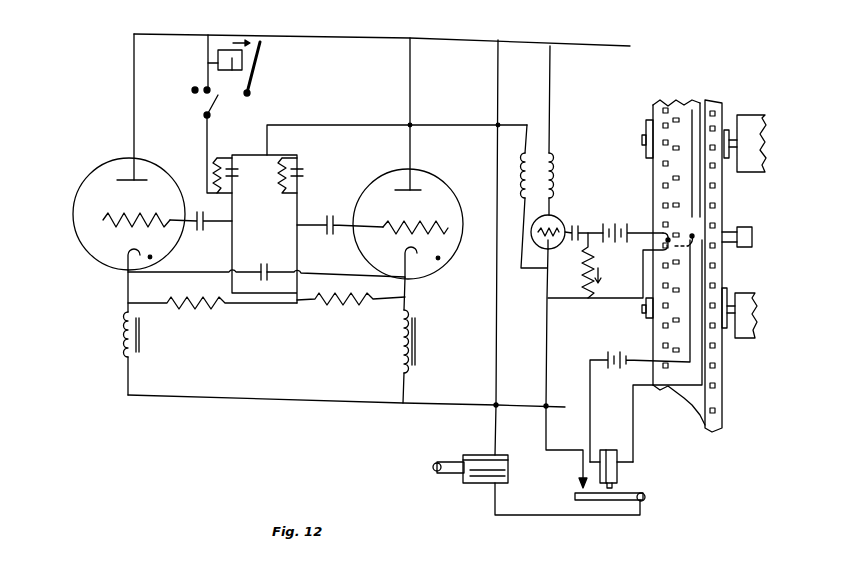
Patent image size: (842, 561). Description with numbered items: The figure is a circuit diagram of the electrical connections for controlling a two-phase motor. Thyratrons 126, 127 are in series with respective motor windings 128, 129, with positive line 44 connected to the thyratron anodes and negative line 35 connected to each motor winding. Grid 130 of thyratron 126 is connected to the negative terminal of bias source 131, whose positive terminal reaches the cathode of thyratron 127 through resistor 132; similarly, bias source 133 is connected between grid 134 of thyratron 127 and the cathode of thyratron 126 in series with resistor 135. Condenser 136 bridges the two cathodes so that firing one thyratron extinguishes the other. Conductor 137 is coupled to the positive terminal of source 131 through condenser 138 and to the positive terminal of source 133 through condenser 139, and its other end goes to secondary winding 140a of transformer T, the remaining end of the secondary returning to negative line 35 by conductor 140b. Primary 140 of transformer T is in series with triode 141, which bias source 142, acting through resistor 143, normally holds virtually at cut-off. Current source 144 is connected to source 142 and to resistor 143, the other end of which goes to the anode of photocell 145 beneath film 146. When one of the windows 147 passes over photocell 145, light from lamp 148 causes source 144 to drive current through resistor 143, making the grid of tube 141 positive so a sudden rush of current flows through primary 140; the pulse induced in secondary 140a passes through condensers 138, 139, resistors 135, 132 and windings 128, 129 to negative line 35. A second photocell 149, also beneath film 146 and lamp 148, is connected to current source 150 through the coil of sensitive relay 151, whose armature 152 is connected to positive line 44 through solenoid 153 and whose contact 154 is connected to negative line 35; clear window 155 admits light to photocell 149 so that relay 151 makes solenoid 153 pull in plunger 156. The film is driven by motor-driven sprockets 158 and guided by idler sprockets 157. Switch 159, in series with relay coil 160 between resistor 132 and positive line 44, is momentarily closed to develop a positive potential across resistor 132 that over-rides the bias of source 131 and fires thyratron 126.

The positive line 44 is at (568, 46).
The negative line 35 is at (240, 403).
The thyratron 126 is at (73, 210).
The thyratron 127 is at (402, 178).
The motor winding 128 is at (122, 340).
The motor winding 129 is at (396, 352).
The grid 130 is at (138, 218).
The bias source 131 is at (200, 232).
The resistor 132 is at (365, 302).
The bias source 133 is at (332, 234).
The grid 134 is at (427, 226).
The resistor 135 is at (217, 307).
The condenser 136 is at (253, 267).
The conductor 137 is at (300, 125).
The condenser 138 is at (238, 176).
The condenser 139 is at (300, 177).
The primary winding 140 is at (556, 175).
The secondary winding 140a is at (525, 152).
The conductor 140b is at (543, 358).
The transformer T is at (553, 153).
The triode 141 is at (560, 221).
The bias source 142 is at (576, 226).
The resistor 143 is at (585, 274).
The current source 144 is at (612, 224).
The photocell 145 is at (645, 247).
The film 146 is at (652, 185).
The windows 147 is at (677, 114).
The lamp 148 is at (735, 232).
The photocell 149 is at (683, 233).
The current source 150 is at (607, 358).
The sensitive relay 151 is at (622, 470).
The relay armature 152 is at (594, 500).
The solenoid 153 is at (484, 455).
The contact 154 is at (575, 485).
The window 155 is at (702, 110).
The plunger 156 is at (456, 474).
The idler sprockets 157 is at (648, 130).
The motor-driven sprockets 158 is at (646, 323).
The switch 159 is at (202, 102).
The relay coil 160 is at (234, 65).